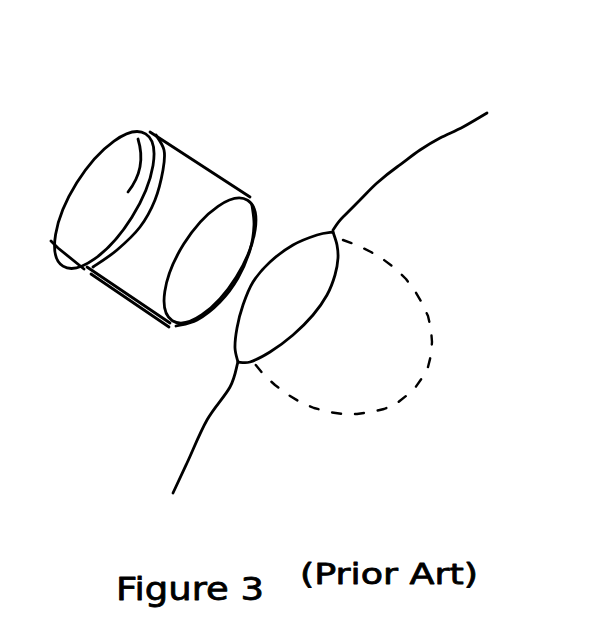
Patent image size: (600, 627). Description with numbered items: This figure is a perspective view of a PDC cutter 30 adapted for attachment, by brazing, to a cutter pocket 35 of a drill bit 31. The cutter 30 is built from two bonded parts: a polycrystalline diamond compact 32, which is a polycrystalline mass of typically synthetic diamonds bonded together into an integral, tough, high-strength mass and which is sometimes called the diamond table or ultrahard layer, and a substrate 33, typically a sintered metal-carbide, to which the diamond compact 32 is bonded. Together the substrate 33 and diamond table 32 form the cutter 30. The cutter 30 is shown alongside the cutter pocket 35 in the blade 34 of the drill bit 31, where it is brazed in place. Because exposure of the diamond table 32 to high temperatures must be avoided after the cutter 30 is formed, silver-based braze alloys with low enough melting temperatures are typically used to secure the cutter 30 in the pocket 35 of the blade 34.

The PDC cutter 30 is at (154, 179).
The drill bit 31 is at (430, 136).
The polycrystalline diamond compact 32 is at (147, 131).
The substrate 33 is at (199, 184).
The blade 34 is at (428, 228).
The cutter pocket 35 is at (427, 302).